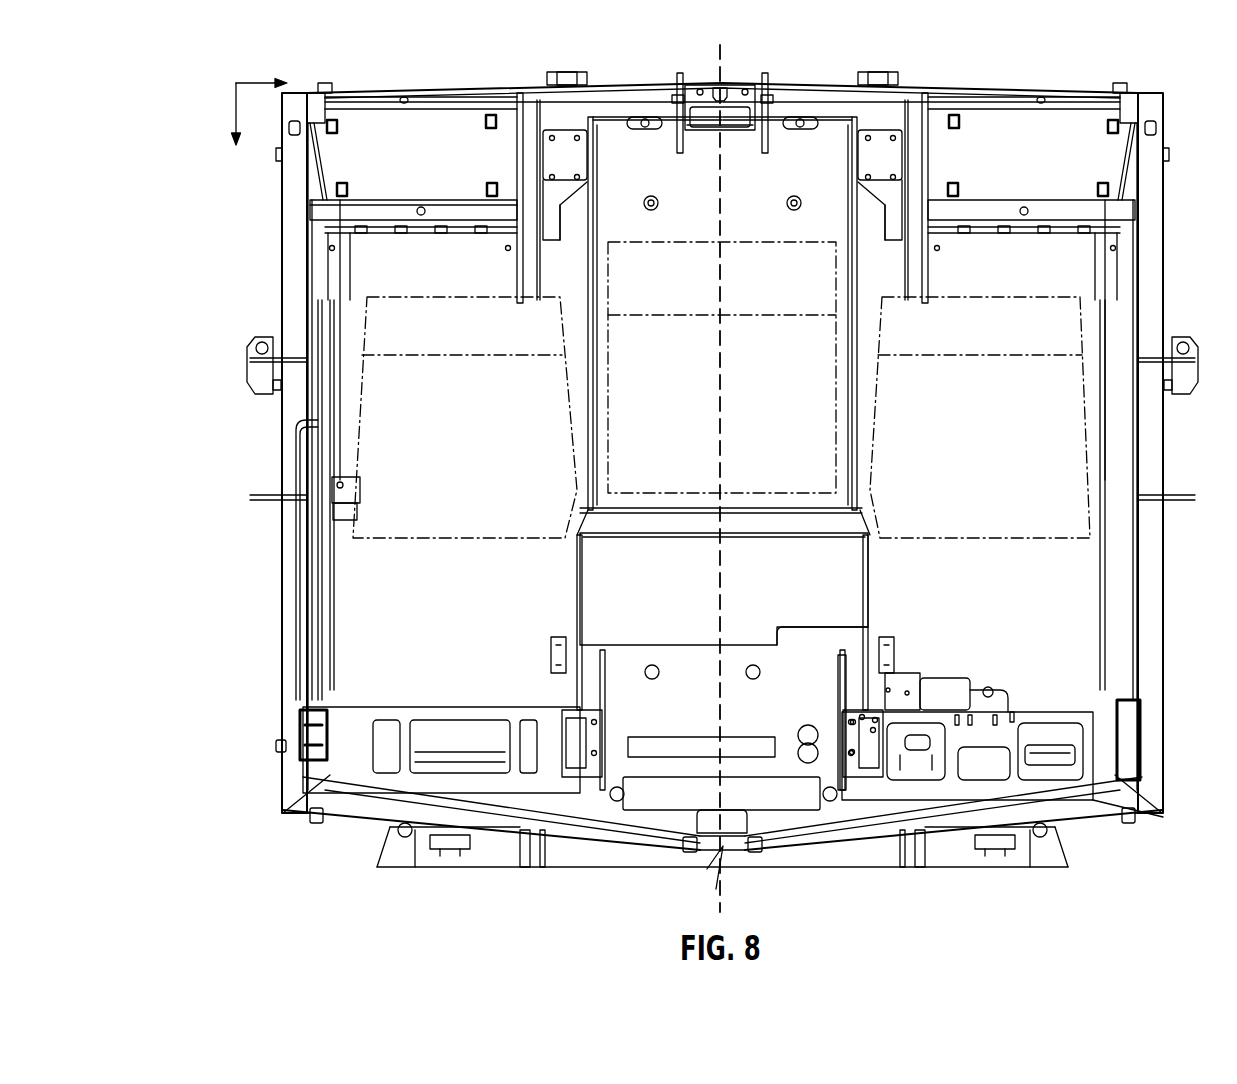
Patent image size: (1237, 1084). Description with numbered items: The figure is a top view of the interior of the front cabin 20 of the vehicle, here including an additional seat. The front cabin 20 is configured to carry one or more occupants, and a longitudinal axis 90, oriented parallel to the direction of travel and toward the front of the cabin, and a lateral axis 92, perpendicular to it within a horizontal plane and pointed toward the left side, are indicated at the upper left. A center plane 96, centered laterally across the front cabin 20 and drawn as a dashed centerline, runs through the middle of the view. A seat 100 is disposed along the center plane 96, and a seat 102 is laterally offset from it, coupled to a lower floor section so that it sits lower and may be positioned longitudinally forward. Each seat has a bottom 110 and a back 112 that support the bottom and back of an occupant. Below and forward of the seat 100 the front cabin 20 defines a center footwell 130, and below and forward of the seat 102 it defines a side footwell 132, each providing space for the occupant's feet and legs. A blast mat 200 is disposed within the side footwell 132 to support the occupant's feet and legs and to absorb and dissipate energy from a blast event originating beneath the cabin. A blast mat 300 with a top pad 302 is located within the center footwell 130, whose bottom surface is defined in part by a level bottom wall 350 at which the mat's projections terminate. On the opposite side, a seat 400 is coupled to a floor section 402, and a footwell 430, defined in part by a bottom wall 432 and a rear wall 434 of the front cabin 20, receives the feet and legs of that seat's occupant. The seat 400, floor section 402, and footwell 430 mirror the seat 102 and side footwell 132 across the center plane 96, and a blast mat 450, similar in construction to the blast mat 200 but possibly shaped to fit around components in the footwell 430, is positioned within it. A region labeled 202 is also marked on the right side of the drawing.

The front cabin 20 is at (1170, 90).
The longitudinal axis 90 is at (236, 103).
The lateral axis 92 is at (257, 82).
The center plane 96 is at (723, 74).
The seat 100 is at (705, 262).
The seat 102 is at (1030, 315).
The bottom 110 is at (494, 449).
The back 112 is at (497, 339).
The center footwell 130 is at (790, 760).
The side footwell 132 is at (985, 740).
The blast mat 200 is at (1147, 560).
The side panel region 202 is at (1004, 653).
The blast mat 300 is at (615, 658).
The top pad 302 is at (697, 598).
The bottom wall 350 is at (820, 633).
The seat 400 is at (400, 338).
The floor section 402 is at (355, 268).
The footwell 430 is at (305, 757).
The bottom wall 432 is at (318, 522).
The rear wall 434 is at (333, 512).
The blast mat 450 is at (365, 646).